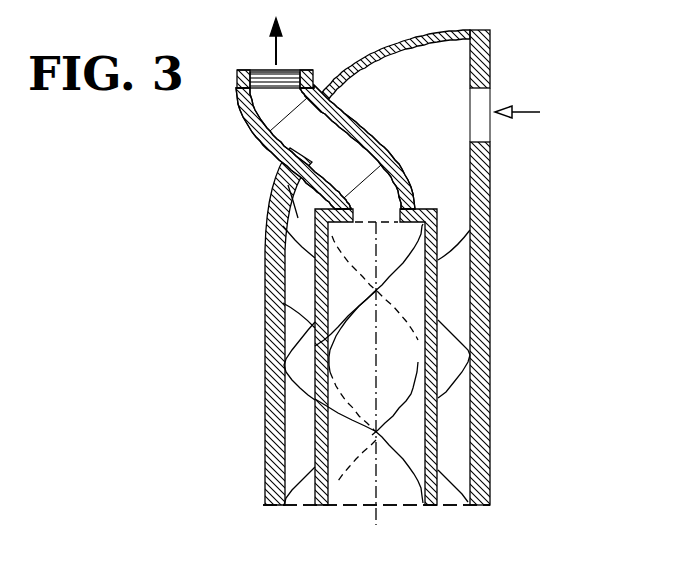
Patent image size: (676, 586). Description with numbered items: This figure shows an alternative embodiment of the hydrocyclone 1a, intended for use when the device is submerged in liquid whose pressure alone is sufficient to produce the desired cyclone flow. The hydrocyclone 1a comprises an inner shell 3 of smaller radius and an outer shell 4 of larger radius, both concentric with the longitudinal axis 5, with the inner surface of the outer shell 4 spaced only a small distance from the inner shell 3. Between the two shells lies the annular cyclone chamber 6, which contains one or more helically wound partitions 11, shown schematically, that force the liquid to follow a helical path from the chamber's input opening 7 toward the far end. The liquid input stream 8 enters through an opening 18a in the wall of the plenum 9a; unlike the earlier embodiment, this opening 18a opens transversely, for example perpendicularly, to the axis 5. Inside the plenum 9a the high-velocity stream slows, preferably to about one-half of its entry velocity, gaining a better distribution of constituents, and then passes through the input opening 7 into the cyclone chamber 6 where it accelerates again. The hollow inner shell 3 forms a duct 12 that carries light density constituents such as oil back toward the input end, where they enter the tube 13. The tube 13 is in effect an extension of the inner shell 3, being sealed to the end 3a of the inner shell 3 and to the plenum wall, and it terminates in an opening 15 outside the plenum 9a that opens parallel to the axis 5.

The hydrocyclone 1a is at (510, 302).
The inner shell 3 is at (438, 278).
The end of the inner shell 3a is at (427, 207).
The outer shell 4 is at (495, 457).
The longitudinal axis 5 is at (376, 517).
The cyclone chamber 6 is at (265, 345).
The input opening 7 is at (272, 182).
The liquid input stream 8 is at (527, 113).
The plenum 9a is at (400, 82).
The helically wound partitions 11 is at (265, 287).
The duct 12 is at (400, 365).
The tube 13 is at (250, 117).
The opening 15 is at (267, 68).
The opening 18a is at (490, 130).